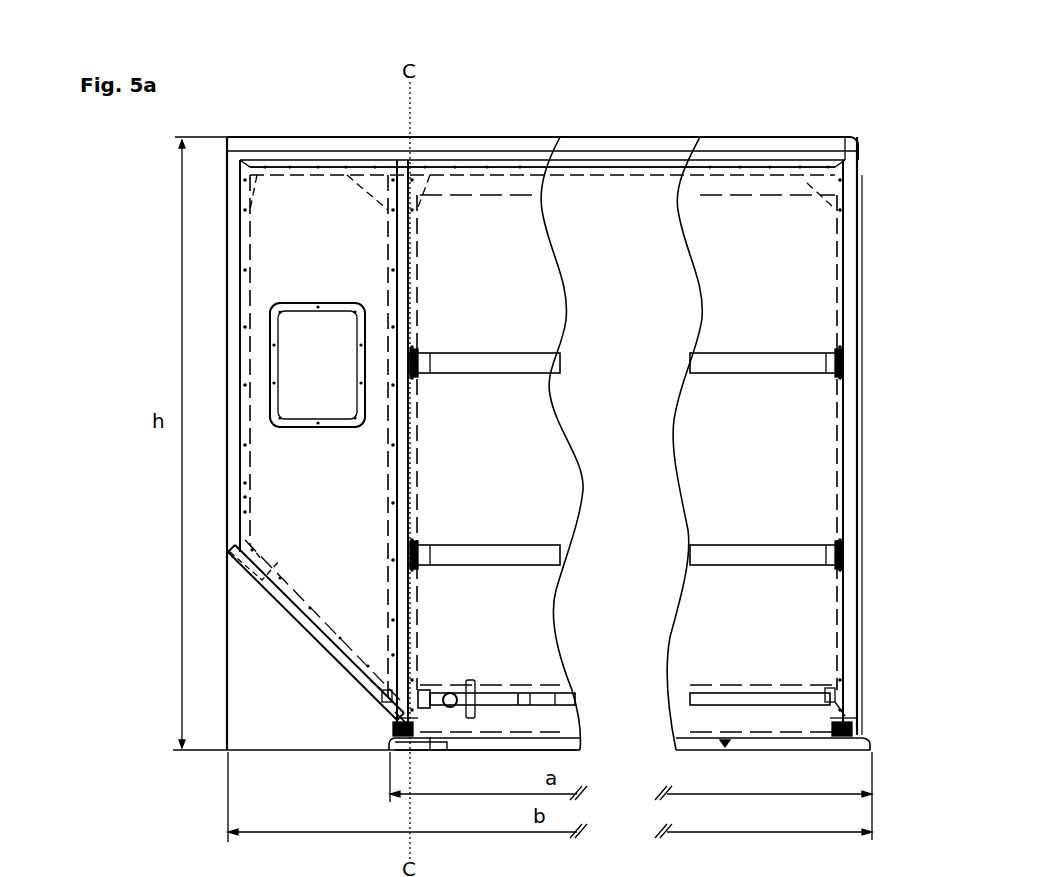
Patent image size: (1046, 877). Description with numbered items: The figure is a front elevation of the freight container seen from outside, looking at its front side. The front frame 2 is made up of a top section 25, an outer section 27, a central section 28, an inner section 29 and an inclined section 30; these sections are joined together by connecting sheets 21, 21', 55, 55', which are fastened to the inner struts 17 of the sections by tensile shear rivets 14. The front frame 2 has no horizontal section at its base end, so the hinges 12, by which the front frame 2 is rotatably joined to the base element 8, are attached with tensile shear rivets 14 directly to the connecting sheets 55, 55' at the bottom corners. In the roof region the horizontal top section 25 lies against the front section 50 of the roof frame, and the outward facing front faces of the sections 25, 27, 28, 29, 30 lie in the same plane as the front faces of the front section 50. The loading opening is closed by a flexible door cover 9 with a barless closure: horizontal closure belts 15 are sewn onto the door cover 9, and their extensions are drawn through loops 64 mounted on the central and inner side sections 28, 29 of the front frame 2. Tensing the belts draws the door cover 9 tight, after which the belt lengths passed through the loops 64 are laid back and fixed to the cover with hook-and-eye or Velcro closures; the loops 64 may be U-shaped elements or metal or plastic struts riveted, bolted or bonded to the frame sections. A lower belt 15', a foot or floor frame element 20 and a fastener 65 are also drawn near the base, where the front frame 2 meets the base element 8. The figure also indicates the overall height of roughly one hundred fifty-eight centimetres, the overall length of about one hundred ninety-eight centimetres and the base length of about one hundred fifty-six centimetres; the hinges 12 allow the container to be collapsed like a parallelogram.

The front frame 2 is at (852, 565).
The base element 8 is at (725, 745).
The door cover 9 is at (790, 290).
The hinges 12 is at (392, 738).
The tensile shear rivets 14 is at (245, 385).
The closure belts 15 is at (625, 460).
The lower shelf rail 15' is at (626, 706).
The inner struts 17 is at (288, 170).
The floor frame 20 is at (437, 751).
The connecting sheet 21 is at (521, 149).
The connecting sheet 21' is at (196, 554).
The top section 25 is at (712, 165).
The outer section 27 is at (237, 316).
The central section 28 is at (392, 713).
The inner section 29 is at (855, 462).
The inclined section 30 is at (290, 610).
The front section of the roof frame 50 is at (548, 146).
The connecting sheet 55 is at (877, 693).
The connecting sheet 55' is at (337, 693).
The loops 64 is at (428, 380).
The fastener 65 is at (545, 705).